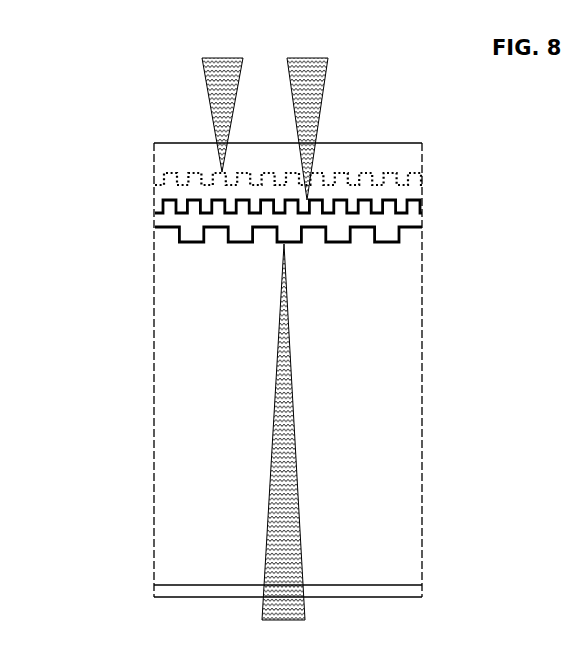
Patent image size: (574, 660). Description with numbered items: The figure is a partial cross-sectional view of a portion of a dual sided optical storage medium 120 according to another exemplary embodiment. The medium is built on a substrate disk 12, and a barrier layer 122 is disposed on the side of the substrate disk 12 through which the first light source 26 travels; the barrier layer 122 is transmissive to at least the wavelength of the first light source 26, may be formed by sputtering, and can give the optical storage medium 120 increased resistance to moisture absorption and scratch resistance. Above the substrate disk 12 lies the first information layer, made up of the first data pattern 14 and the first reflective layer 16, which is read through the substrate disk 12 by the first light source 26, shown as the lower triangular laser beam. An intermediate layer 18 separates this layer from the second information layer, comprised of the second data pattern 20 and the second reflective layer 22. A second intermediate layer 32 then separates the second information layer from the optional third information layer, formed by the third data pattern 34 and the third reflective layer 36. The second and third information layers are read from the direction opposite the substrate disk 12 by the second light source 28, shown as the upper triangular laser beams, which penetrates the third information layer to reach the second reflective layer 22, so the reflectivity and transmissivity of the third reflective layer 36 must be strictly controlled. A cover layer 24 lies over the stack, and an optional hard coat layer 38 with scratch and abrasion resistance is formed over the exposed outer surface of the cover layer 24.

The dual sided optical storage medium 120 is at (52, 98).
The substrate disk 12 is at (422, 494).
The barrier layer 122 is at (422, 595).
The first data pattern 14 is at (393, 245).
The first reflective layer 16 is at (423, 227).
The intermediate layer 18 is at (423, 223).
The second data pattern 20 is at (385, 198).
The second reflective layer 22 is at (423, 213).
The cover layer 24 is at (423, 165).
The first light source 26 is at (283, 444).
The second light source 28 is at (265, 119).
The second intermediate layer 32 is at (423, 197).
The third data pattern 34 is at (362, 173).
The third reflective layer 36 is at (422, 178).
The hard coat layer 38 is at (423, 148).